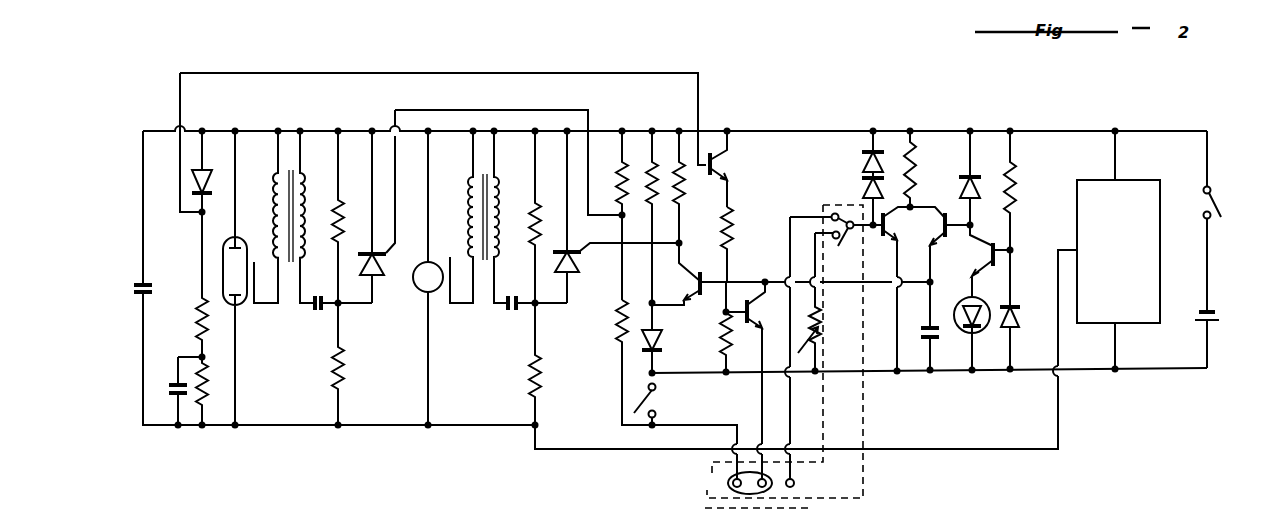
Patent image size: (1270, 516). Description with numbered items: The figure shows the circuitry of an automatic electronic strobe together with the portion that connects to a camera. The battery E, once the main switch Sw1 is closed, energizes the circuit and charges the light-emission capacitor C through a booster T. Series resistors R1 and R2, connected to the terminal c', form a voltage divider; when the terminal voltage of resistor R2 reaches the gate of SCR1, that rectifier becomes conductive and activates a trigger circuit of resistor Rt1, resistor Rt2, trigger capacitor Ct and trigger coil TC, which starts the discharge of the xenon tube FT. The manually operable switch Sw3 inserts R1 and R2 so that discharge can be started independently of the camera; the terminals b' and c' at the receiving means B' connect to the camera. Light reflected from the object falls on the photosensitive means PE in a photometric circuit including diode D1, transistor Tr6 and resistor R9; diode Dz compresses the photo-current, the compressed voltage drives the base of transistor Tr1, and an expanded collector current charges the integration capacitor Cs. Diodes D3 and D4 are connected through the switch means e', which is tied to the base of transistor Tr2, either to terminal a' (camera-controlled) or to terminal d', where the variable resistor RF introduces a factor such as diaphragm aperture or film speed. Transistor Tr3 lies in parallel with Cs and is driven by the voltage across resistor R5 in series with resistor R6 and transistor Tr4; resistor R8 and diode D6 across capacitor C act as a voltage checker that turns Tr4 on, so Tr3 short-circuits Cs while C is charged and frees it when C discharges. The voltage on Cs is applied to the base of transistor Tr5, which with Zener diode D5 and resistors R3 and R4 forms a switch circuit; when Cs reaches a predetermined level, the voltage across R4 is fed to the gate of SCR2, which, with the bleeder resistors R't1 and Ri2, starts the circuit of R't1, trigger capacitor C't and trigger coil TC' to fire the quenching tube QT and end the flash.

The diode D6 is at (192, 178).
The light-emission capacitor C is at (143, 343).
The resistor R8 is at (198, 318).
The xenon discharge tube FT is at (245, 302).
The trigger coil TC is at (240, 217).
The trigger capacitor Ct is at (316, 320).
The resistor Rt2 is at (334, 210).
The resistor Rt1 is at (332, 376).
The silicon controlled rectifier SCR1 is at (376, 280).
The quenching tube QT is at (430, 294).
The trigger coil TC' is at (471, 217).
The trigger capacitor C't is at (525, 322).
The resistor Ri2 is at (528, 215).
The resistor R't1 is at (502, 364).
The silicon controlled rectifier SCR2 is at (603, 298).
The resistor R1 is at (616, 330).
The resistor R2 is at (618, 175).
The resistor R3 is at (650, 180).
The resistor R4 is at (680, 180).
The Zener diode D5 is at (660, 338).
The manually operable switch Sw3 is at (658, 400).
The transistor Tr5 is at (704, 300).
The transistor Tr4 is at (722, 162).
The resistor R6 is at (735, 222).
The resistor R5 is at (720, 360).
The transistor Tr3 is at (752, 328).
The terminal a' is at (814, 335).
The switch means e' is at (855, 236).
The terminal d' is at (827, 249).
The variable resistor RF is at (824, 322).
The diode D4 is at (861, 164).
The diode D3 is at (861, 188).
The transistor Tr2 is at (897, 289).
The transistor Tr1 is at (942, 212).
The integration capacitor Cs is at (926, 340).
The diode Dz is at (980, 182).
The transistor Tr6 is at (982, 270).
The photosensitive means PE is at (968, 334).
The resistor R9 is at (1014, 175).
The diode D1 is at (1018, 318).
The booster T is at (1077, 206).
The main switch Sw1 is at (1213, 192).
The battery E is at (1214, 322).
The terminal c' is at (776, 356).
The terminal b' is at (715, 468).
The receiving means B' is at (697, 498).